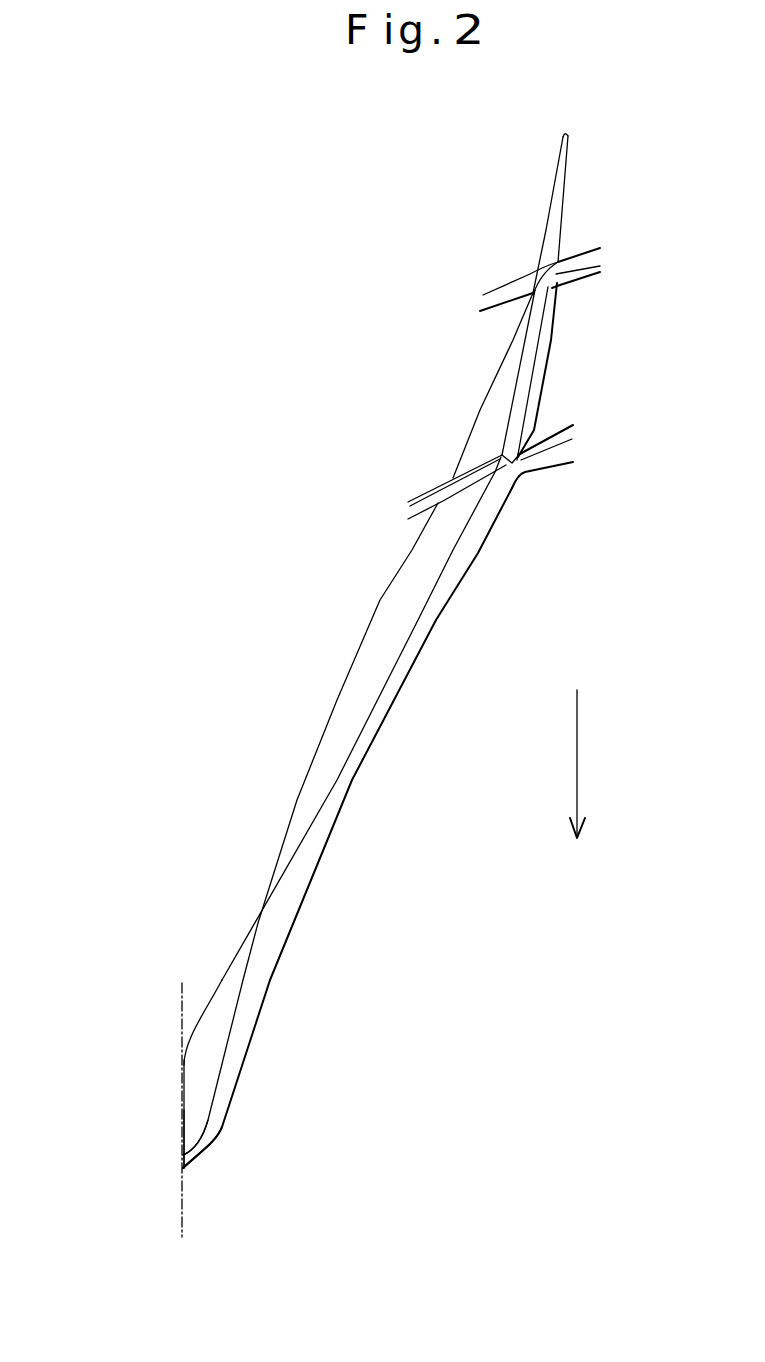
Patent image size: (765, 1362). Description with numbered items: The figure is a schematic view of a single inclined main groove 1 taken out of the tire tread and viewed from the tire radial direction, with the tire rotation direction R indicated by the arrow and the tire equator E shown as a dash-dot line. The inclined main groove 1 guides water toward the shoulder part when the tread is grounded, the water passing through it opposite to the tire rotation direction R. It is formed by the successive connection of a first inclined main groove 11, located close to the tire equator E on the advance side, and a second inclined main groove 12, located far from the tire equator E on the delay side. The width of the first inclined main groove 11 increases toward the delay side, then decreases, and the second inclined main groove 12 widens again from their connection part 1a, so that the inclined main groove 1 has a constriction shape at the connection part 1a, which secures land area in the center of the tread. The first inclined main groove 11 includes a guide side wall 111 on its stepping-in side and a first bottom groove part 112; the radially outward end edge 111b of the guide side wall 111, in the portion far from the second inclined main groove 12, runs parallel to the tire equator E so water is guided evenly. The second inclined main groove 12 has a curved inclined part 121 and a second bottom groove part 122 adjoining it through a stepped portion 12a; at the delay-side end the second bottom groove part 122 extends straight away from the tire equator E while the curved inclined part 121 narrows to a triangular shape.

The inclined main groove 1 is at (211, 776).
The connection part 1a is at (268, 940).
The first inclined main groove 11 is at (215, 988).
The guide side wall 111 is at (200, 1070).
The radially outward end edge 111b is at (180, 1119).
The first bottom groove part 112 is at (233, 1072).
The second inclined main groove 12 is at (298, 810).
The stepped portion 12a is at (396, 640).
The curved inclined part 121 is at (424, 556).
The second bottom groove part 122 is at (463, 562).
The tire rotation direction R is at (578, 764).
The tire equator E is at (182, 1202).